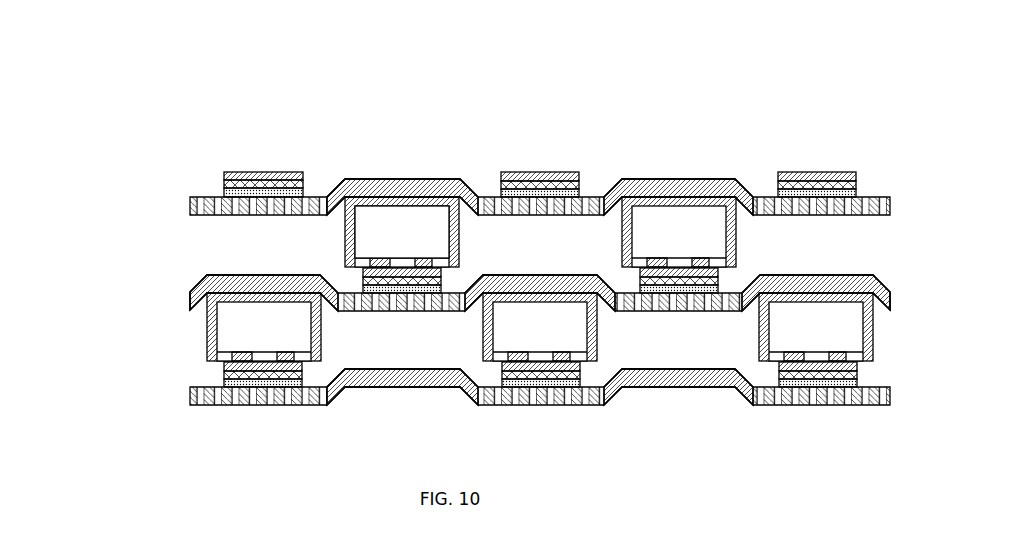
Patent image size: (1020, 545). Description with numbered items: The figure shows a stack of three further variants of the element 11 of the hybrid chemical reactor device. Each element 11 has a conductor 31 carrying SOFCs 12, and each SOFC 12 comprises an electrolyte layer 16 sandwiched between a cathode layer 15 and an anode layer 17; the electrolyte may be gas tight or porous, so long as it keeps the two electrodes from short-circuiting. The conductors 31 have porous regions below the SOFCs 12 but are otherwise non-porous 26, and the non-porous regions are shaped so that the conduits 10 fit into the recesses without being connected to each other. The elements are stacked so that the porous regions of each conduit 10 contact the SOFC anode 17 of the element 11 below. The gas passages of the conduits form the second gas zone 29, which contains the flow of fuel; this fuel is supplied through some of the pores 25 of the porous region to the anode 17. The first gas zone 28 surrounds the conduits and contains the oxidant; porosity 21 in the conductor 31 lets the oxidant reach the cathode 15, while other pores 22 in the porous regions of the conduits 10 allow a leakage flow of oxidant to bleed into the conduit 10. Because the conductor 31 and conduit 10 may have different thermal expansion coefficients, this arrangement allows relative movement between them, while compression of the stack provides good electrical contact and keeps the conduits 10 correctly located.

The conduit 10 is at (532, 279).
The element 11 is at (125, 113).
The SOFC 12 is at (214, 156).
The cathode layer 15 is at (225, 192).
The electrolyte layer 16 is at (235, 183).
The anode layer 17 is at (253, 175).
The porosity 21 is at (547, 398).
The pores 22 is at (862, 366).
The pores 25 is at (683, 260).
The non-porous region 26 is at (397, 176).
The first gas zone 28 is at (283, 254).
The second gas zone 29 is at (393, 244).
The conductor 31 is at (561, 162).